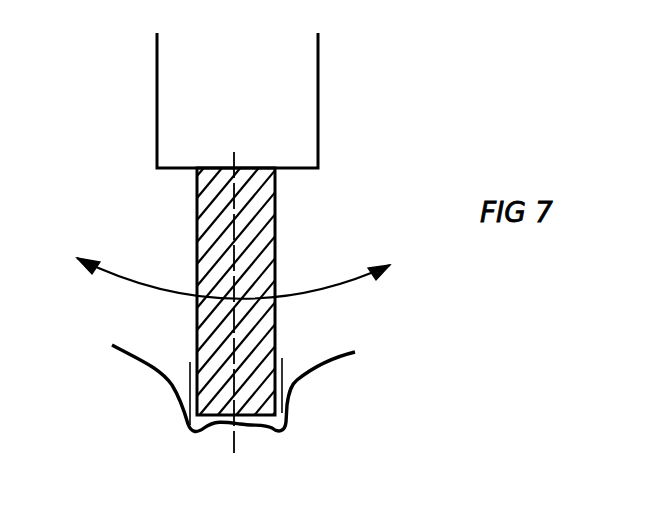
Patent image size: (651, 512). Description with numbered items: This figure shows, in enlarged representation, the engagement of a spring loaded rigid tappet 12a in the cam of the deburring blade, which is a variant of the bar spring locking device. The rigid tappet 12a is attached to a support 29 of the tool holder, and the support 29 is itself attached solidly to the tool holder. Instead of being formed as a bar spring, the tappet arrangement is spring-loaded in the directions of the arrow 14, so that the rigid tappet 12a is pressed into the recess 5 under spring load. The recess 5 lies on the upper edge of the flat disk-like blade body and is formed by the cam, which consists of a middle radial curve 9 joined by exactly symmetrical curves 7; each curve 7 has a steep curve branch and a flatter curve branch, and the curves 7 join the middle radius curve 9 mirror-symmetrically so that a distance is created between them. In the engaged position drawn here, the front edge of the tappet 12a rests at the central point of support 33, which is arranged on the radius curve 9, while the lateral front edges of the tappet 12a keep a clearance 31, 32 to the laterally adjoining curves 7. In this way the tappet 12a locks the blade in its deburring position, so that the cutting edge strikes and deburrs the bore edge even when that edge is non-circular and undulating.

The support 29 is at (296, 99).
The spring loaded rigid tappet 12a is at (257, 228).
The arrow 14 is at (114, 140).
The recess 5 is at (303, 356).
The curves 7 is at (143, 367).
The clearance 31 is at (185, 423).
The clearance 32 is at (285, 412).
The middle radial curve 9 is at (213, 427).
The central point of support 33 is at (250, 427).